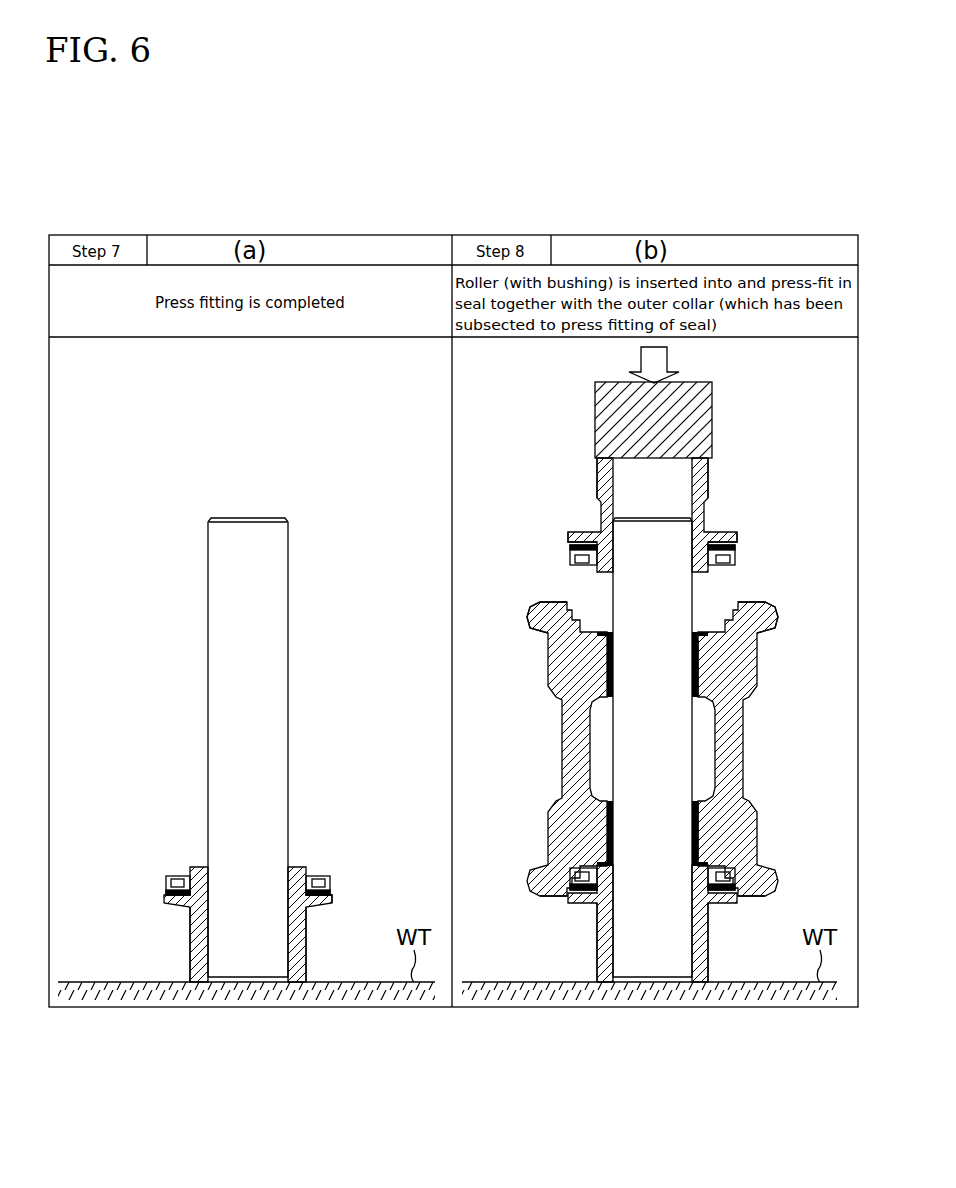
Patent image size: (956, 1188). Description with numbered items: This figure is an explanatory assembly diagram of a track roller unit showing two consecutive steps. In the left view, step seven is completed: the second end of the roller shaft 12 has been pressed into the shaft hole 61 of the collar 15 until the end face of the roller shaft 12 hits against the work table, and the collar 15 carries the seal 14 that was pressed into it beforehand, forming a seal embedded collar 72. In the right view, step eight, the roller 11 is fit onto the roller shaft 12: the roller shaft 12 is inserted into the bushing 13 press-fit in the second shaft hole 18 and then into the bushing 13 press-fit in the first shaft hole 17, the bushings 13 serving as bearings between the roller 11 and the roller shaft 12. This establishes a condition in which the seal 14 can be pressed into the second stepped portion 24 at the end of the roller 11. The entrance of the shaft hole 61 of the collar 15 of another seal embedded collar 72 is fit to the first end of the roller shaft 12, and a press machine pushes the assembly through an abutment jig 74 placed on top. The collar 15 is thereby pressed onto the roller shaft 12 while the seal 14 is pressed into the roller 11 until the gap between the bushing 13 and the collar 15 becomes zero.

The roller 11 is at (768, 590).
The roller shaft 12 is at (289, 705).
The bushing 13 is at (590, 663).
The seal 14 is at (169, 866).
The collar 15 is at (180, 940).
The first shaft hole 17 is at (698, 670).
The second shaft hole 18 is at (698, 797).
The second stepped portion 24 is at (728, 621).
The shaft hole 61 is at (290, 941).
The seal embedded collar 72 is at (342, 877).
The abutment jig 74 is at (713, 420).